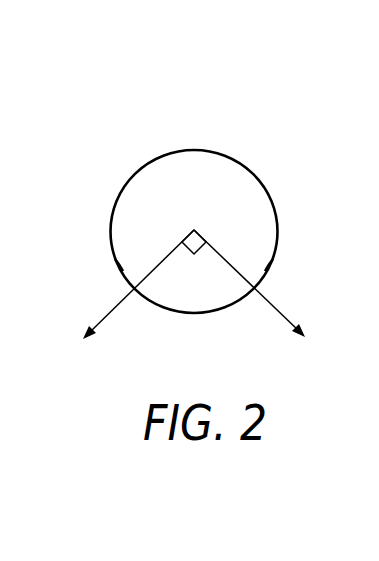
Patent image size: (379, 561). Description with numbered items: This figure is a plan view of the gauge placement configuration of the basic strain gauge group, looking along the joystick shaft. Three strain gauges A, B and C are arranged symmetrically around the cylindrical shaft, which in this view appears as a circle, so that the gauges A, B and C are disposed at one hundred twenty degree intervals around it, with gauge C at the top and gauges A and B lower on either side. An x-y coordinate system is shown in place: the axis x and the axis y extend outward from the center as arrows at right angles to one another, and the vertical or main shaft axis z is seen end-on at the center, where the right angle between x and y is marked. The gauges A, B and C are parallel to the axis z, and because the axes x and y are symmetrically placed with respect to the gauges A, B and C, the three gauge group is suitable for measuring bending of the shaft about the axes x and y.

The strain gauge A is at (120, 273).
The strain gauge B is at (266, 272).
The strain gauge C is at (195, 150).
The x axis X is at (129, 298).
The y axis Y is at (258, 298).
The main shaft axis Z is at (198, 231).